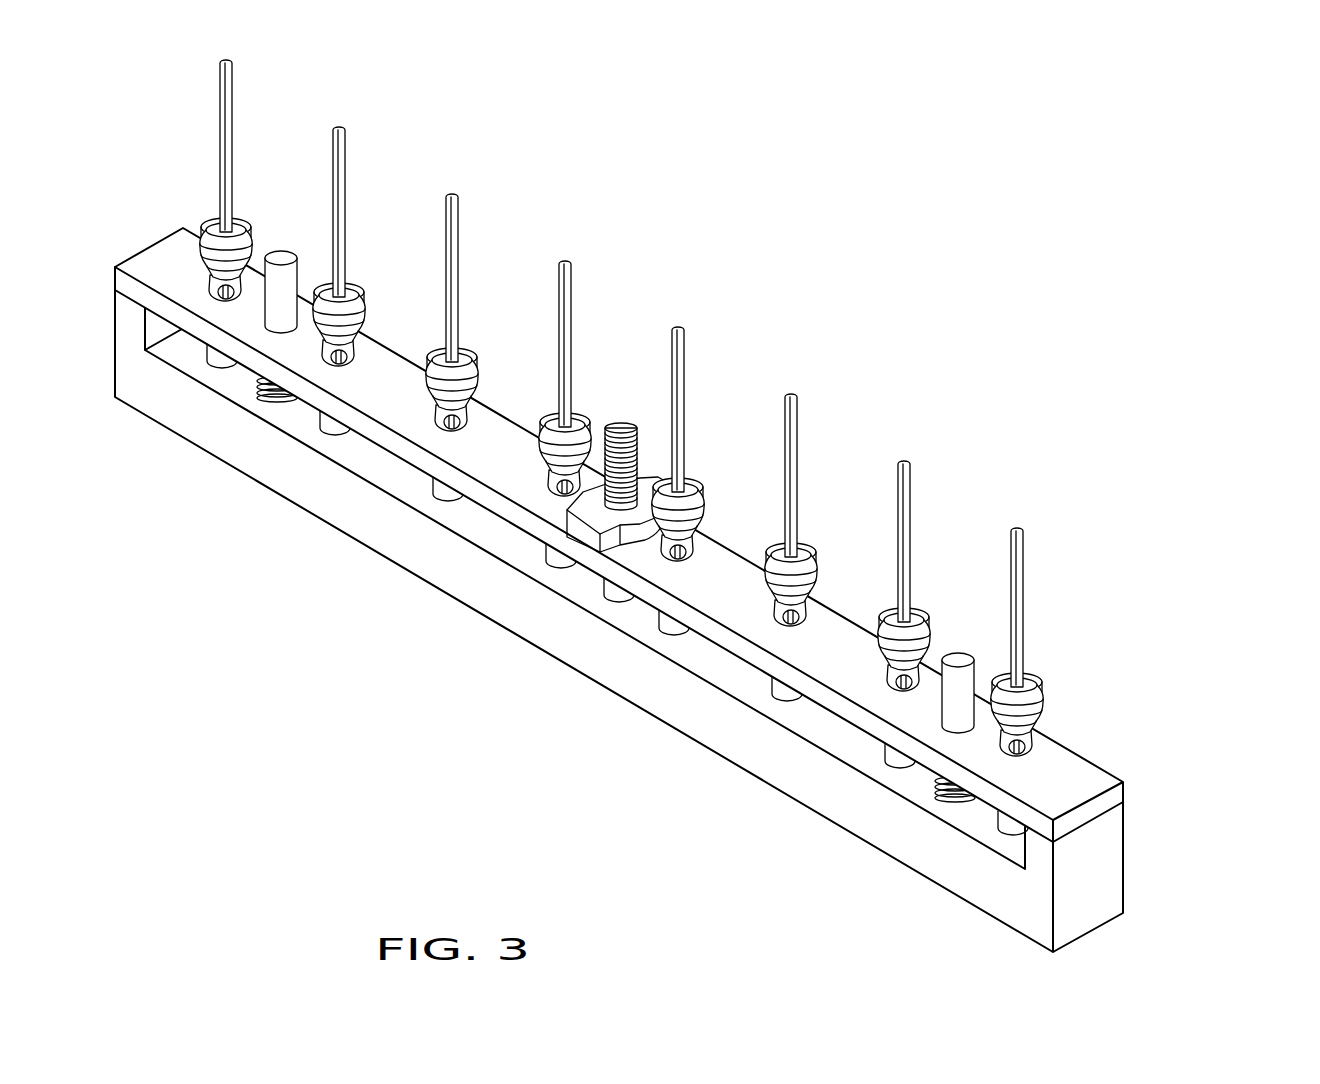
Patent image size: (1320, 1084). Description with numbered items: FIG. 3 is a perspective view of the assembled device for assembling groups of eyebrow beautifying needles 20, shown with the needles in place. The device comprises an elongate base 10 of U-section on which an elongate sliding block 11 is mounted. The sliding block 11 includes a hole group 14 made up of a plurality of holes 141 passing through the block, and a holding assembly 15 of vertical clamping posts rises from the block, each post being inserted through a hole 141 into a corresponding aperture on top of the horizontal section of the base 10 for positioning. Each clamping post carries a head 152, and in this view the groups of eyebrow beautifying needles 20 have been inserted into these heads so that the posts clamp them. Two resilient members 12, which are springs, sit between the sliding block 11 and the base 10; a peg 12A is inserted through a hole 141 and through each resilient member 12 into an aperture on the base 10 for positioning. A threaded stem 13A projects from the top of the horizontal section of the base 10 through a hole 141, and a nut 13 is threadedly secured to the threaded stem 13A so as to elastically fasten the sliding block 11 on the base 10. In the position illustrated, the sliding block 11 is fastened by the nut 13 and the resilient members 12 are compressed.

The base 10 is at (1097, 882).
The sliding block 11 is at (1083, 773).
The resilient member 12 is at (270, 402).
The peg 12A is at (279, 258).
The nut 13 is at (597, 520).
The threaded stem 13A is at (621, 423).
The hole group 14 is at (360, 363).
The holding assembly 15 is at (480, 363).
The eyebrow beautifying needles 20 is at (706, 415).
The hole 141 is at (1043, 770).
The head 152 is at (1040, 698).